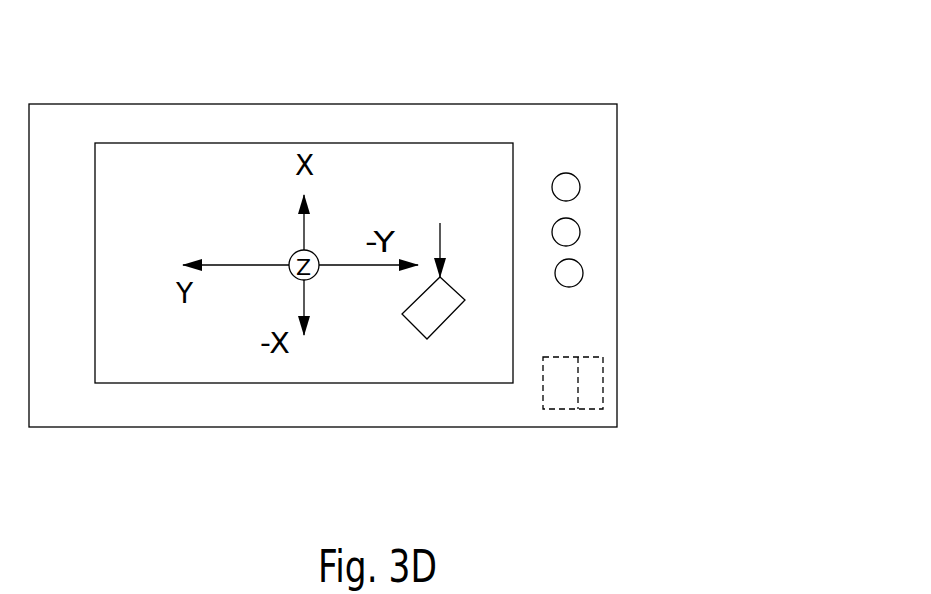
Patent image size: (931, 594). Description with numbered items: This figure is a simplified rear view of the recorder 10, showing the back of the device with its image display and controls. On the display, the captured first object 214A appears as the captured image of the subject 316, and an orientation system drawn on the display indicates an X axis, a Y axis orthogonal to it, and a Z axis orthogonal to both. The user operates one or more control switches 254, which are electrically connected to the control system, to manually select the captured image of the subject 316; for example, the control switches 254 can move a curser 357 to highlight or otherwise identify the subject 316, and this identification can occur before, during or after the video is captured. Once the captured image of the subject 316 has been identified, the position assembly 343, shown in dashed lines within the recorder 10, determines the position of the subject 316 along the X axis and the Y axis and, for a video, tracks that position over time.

The recorder 10 is at (153, 98).
The captured first object 214A is at (304, 322).
The control switches 254 is at (577, 230).
The subject 316 is at (437, 313).
The curser 357 is at (440, 240).
The position assembly 343 is at (595, 397).